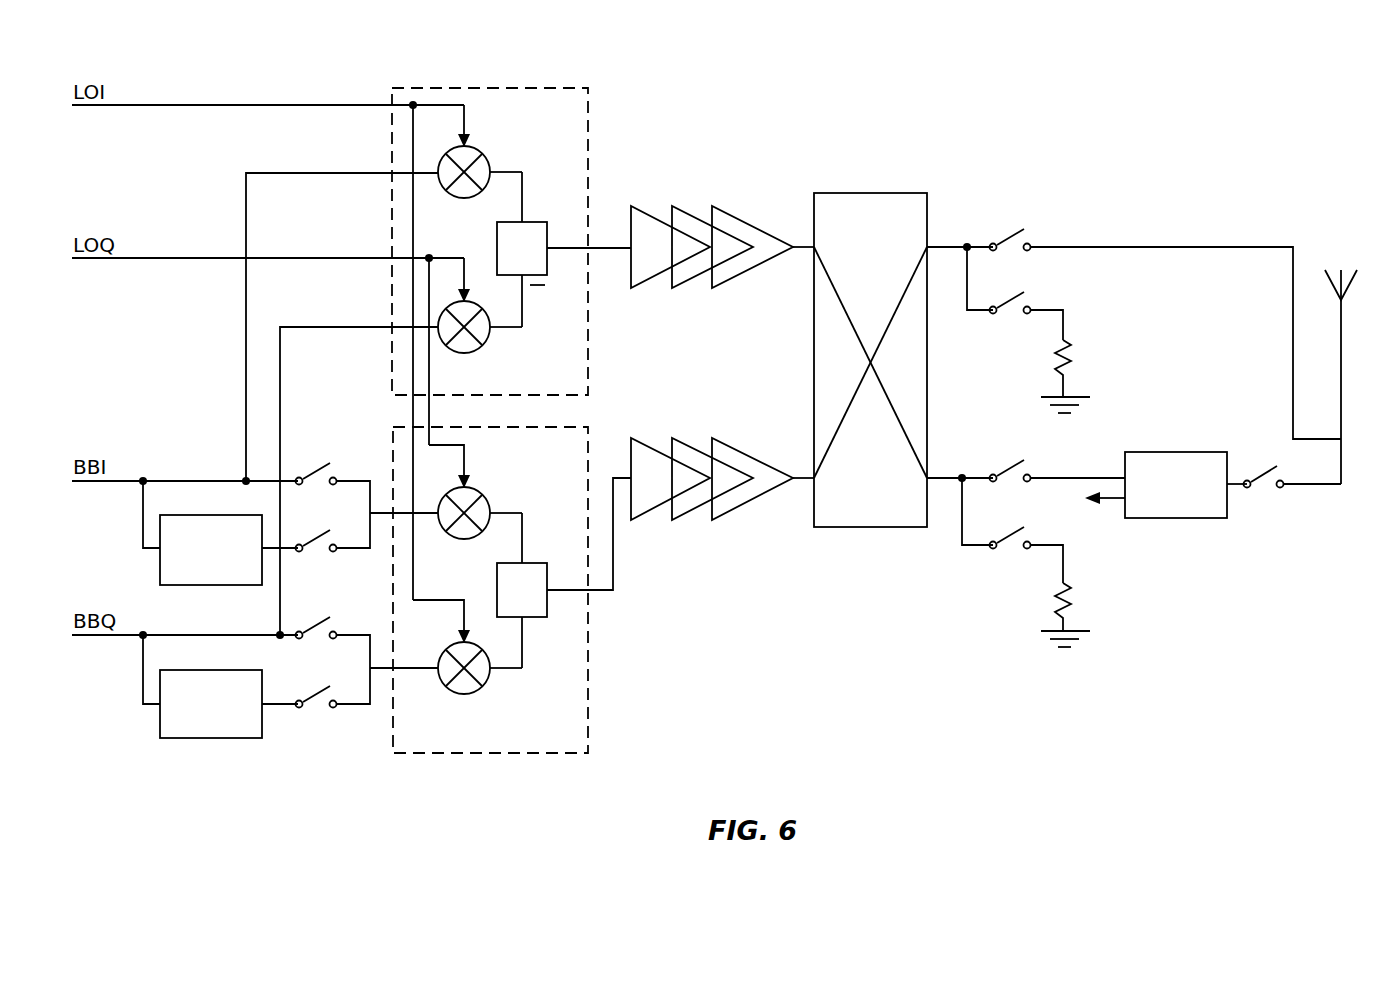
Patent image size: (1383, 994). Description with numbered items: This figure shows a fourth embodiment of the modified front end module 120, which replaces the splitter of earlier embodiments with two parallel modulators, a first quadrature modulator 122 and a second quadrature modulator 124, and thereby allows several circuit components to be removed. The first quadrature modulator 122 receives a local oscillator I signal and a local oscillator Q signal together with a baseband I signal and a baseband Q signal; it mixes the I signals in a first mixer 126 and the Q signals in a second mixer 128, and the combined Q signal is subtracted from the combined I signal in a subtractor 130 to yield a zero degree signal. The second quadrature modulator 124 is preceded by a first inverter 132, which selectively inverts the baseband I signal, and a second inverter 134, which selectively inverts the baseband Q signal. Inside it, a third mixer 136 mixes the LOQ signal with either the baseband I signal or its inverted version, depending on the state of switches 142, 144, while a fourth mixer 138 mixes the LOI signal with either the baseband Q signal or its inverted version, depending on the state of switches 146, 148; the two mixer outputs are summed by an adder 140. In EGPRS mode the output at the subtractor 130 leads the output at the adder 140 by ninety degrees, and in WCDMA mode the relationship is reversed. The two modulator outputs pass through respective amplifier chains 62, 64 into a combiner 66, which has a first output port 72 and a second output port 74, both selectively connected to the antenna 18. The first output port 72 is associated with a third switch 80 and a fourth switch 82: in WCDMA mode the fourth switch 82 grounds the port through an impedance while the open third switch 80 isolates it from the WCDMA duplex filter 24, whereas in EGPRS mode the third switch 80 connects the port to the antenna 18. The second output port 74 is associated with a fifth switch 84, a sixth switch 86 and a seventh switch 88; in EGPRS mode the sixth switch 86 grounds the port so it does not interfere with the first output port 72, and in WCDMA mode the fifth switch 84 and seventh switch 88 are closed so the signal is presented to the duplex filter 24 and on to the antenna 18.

The front end module 120 is at (893, 114).
The first quadrature modulator 122 is at (520, 88).
The second quadrature modulator 124 is at (588, 690).
The first mixer 126 is at (481, 153).
The second mixer 128 is at (481, 345).
The subtractor 130 is at (547, 228).
The first inverter 132 is at (197, 585).
The second inverter 134 is at (200, 670).
The third mixer 136 is at (481, 494).
The fourth mixer 138 is at (481, 686).
The adder 140 is at (547, 607).
The switch 142 is at (310, 472).
The switch 144 is at (312, 540).
The switch 146 is at (310, 626).
The switch 148 is at (312, 696).
The amplifier chain 62 is at (716, 208).
The amplifier chain 64 is at (716, 518).
The combiner 66 is at (875, 193).
The first output port 72 is at (932, 243).
The second output port 74 is at (932, 474).
The third switch 80 is at (1005, 239).
The fourth switch 82 is at (1005, 302).
The fifth switch 84 is at (1005, 470).
The sixth switch 86 is at (1003, 537).
The seventh switch 88 is at (1258, 477).
The WCDMA duplex filter 24 is at (1197, 452).
The antenna 18 is at (1351, 252).